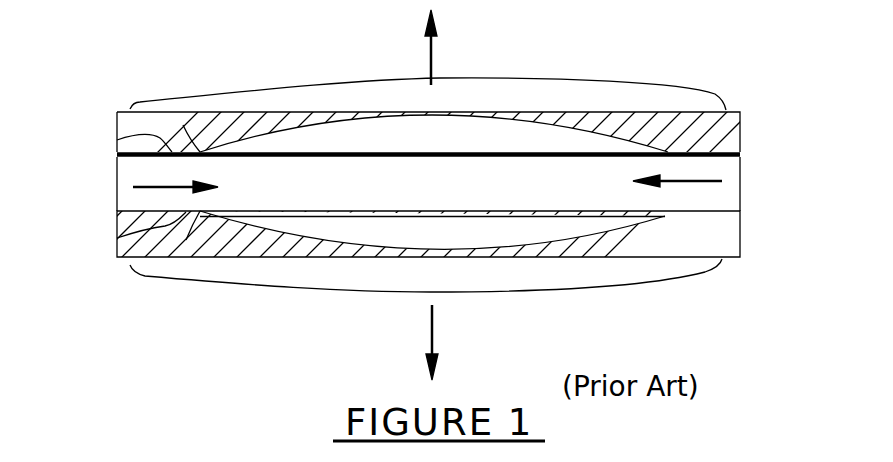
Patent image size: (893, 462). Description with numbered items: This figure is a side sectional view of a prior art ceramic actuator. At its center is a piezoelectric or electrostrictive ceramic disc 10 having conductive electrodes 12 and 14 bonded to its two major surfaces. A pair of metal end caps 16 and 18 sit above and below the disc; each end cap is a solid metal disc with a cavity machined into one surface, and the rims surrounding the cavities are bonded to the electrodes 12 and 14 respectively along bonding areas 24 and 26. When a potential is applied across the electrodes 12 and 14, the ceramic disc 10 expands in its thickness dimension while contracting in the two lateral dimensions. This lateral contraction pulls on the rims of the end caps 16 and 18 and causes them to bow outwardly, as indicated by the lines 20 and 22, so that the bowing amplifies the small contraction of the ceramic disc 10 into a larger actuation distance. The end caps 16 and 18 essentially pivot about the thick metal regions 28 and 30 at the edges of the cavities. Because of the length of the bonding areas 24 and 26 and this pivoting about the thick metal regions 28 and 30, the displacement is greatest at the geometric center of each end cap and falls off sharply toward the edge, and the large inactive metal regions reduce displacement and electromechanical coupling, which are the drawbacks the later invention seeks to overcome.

The ceramic disc 10 is at (727, 176).
The conductive electrode 12 is at (531, 150).
The conductive electrode 14 is at (553, 217).
The metal end cap 16 is at (727, 129).
The metal end cap 18 is at (720, 233).
The line showing outward bowing 20 is at (345, 80).
The line showing outward bowing 22 is at (312, 290).
The bonding area 24 is at (117, 140).
The bonding area 26 is at (117, 238).
The thick metal region 28 is at (183, 125).
The thick metal region 30 is at (186, 240).